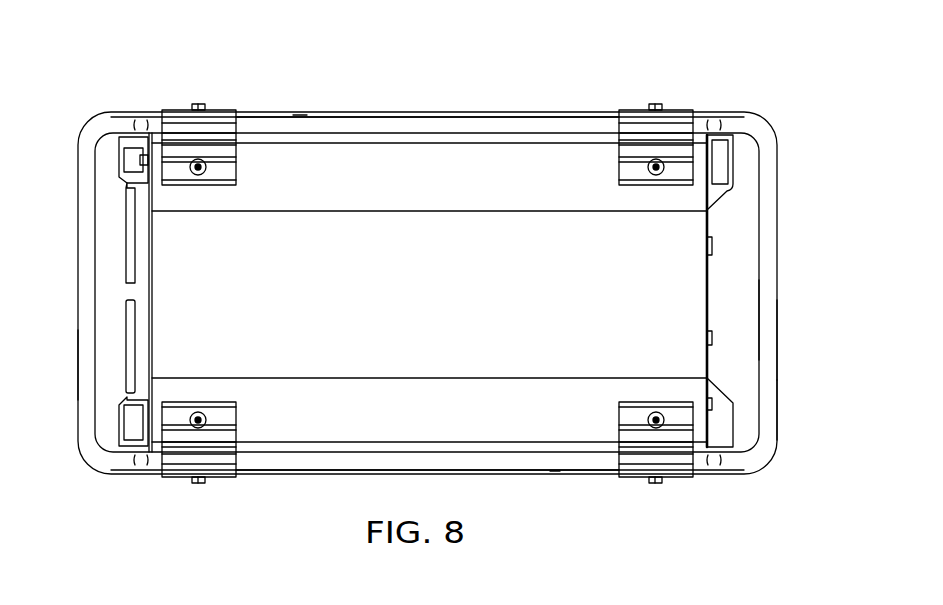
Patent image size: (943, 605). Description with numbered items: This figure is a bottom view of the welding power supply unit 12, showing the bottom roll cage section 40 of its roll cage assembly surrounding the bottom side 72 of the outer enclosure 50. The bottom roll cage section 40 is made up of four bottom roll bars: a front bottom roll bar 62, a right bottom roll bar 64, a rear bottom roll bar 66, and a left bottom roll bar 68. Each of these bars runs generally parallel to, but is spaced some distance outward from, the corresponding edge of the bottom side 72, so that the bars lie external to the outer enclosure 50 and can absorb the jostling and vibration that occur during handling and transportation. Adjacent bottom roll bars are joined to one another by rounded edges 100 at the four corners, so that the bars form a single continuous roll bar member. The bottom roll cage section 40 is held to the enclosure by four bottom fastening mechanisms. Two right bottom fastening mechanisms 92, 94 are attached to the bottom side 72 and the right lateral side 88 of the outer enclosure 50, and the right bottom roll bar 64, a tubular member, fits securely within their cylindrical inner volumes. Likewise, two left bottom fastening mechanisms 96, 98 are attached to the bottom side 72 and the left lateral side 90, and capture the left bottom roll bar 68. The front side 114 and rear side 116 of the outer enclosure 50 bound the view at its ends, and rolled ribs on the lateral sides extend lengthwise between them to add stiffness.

The welding power supply unit 12 is at (752, 68).
The bottom roll cage section 40 is at (789, 369).
The outer enclosure 50 is at (693, 279).
The front bottom roll bar 62 is at (86, 266).
The right bottom roll bar 64 is at (489, 115).
The rear bottom roll bar 66 is at (768, 333).
The left bottom roll bar 68 is at (508, 460).
The bottom side 72 is at (447, 296).
The right lateral side 88 is at (358, 106).
The left lateral side 90 is at (320, 474).
The right bottom fastening mechanism 92 is at (222, 110).
The right bottom fastening mechanism 94 is at (678, 118).
The left bottom fastening mechanism 96 is at (214, 467).
The left bottom fastening mechanism 98 is at (637, 468).
The rounded edges 100 is at (115, 126).
The front side 114 is at (75, 370).
The rear side 116 is at (790, 408).